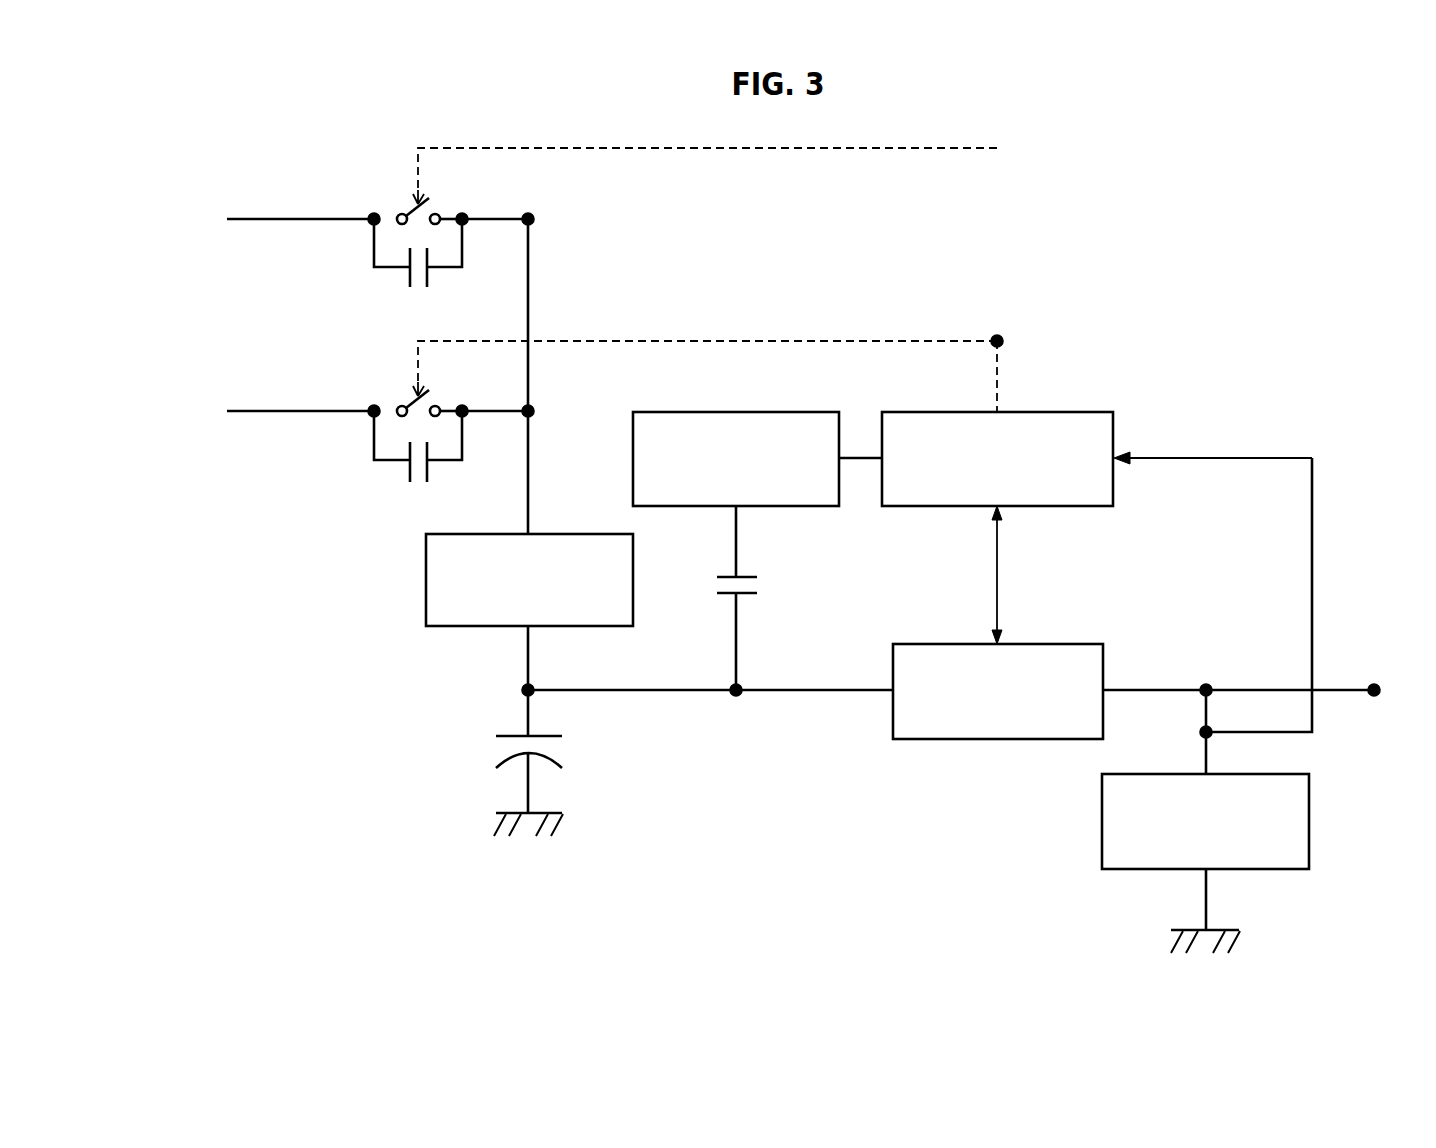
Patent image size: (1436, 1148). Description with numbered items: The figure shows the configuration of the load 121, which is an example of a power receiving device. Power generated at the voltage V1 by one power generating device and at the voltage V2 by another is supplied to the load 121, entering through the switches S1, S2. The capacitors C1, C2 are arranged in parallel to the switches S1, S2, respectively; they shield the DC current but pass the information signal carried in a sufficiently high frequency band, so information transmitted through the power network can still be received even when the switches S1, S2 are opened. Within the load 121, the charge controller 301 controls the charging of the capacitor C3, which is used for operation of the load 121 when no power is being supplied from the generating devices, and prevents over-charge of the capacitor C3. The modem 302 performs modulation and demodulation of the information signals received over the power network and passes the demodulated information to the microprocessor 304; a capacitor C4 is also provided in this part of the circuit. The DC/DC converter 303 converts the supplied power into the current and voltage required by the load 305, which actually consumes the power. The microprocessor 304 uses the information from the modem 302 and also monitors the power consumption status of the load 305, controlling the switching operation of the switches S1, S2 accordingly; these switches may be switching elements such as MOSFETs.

The load 121 is at (1129, 212).
The charge controller 301 is at (426, 577).
The modem 302 is at (793, 412).
The DC/DC converter 303 is at (1052, 644).
The microprocessor 304 is at (1052, 412).
The load 305 is at (1102, 818).
The switch S1 is at (405, 212).
The switch S2 is at (405, 404).
The capacitor C1 is at (418, 266).
The capacitor C2 is at (418, 458).
The capacitor C3 is at (508, 763).
The capacitor C4 is at (722, 598).
The voltage V1 is at (281, 220).
The voltage V2 is at (281, 412).